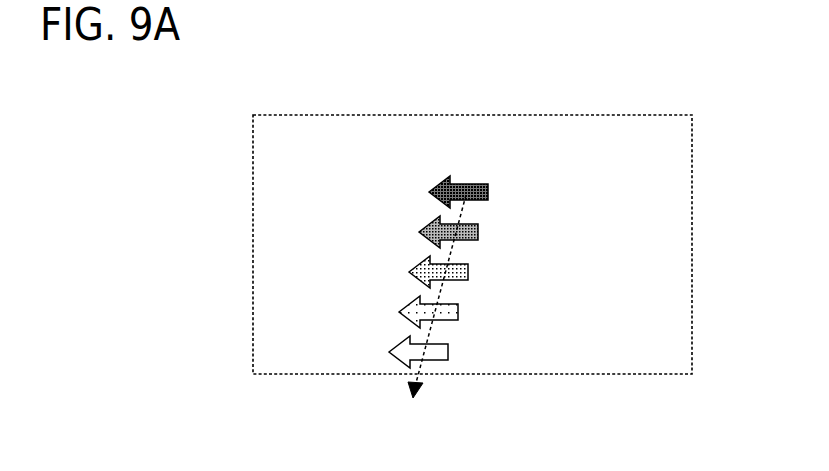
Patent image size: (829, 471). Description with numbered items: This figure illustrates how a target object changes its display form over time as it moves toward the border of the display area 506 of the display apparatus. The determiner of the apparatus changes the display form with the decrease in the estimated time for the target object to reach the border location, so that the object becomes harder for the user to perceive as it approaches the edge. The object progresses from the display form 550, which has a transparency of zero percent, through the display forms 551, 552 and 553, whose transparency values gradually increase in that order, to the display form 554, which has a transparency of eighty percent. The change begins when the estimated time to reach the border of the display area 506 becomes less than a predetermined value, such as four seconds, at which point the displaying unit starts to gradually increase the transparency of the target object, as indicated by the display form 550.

The display area 506 is at (473, 115).
The display form 550 is at (490, 192).
The display form 551 is at (480, 232).
The display form 552 is at (470, 272).
The display form 553 is at (460, 312).
The display form 554 is at (450, 352).